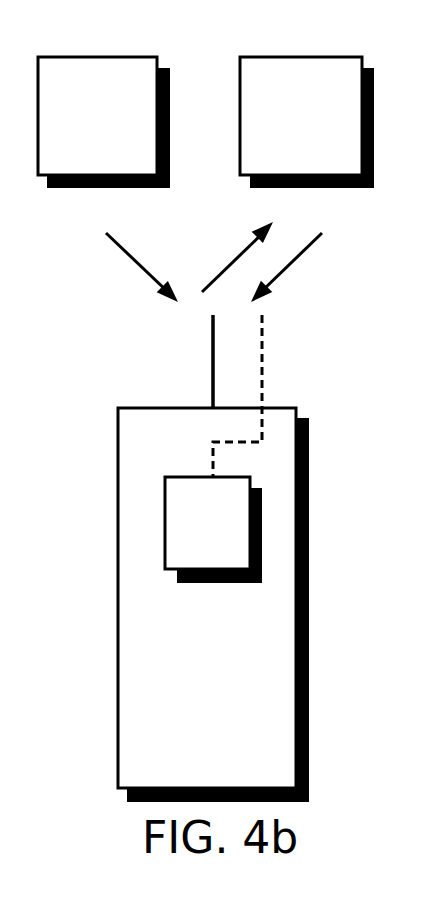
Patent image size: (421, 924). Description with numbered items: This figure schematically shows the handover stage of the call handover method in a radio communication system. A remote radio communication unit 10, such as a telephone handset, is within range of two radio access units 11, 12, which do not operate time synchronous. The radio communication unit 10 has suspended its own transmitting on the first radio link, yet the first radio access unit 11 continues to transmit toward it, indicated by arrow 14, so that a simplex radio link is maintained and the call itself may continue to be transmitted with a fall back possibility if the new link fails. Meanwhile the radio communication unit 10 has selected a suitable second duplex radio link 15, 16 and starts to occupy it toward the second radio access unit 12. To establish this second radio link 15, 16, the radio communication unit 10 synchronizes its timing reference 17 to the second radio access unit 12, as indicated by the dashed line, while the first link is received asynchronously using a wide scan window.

The remote radio communication unit 10 is at (282, 708).
The first radio access unit 11 is at (122, 82).
The second radio access unit 12 is at (333, 78).
The arrow representing first radio link transmission 14 is at (133, 273).
The second duplex radio link 15 is at (222, 262).
The second duplex radio link 16 is at (313, 250).
The timing reference 17 is at (233, 515).